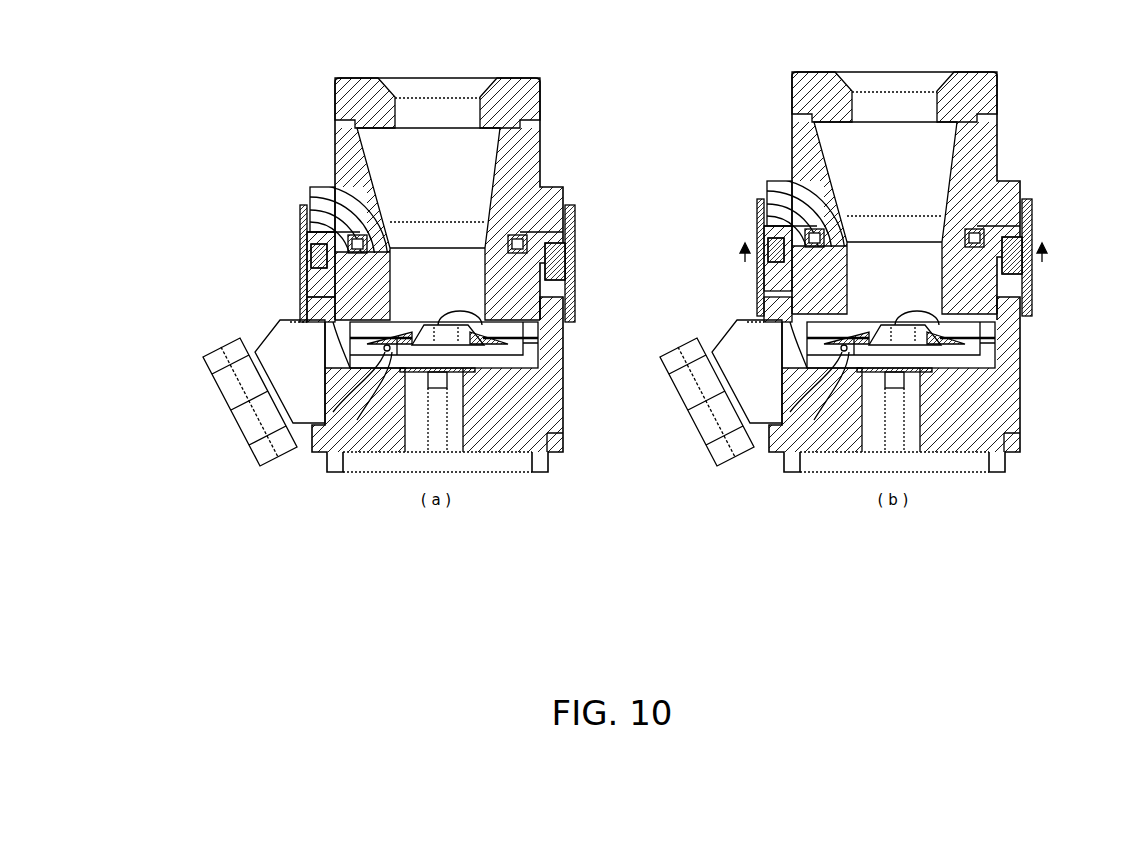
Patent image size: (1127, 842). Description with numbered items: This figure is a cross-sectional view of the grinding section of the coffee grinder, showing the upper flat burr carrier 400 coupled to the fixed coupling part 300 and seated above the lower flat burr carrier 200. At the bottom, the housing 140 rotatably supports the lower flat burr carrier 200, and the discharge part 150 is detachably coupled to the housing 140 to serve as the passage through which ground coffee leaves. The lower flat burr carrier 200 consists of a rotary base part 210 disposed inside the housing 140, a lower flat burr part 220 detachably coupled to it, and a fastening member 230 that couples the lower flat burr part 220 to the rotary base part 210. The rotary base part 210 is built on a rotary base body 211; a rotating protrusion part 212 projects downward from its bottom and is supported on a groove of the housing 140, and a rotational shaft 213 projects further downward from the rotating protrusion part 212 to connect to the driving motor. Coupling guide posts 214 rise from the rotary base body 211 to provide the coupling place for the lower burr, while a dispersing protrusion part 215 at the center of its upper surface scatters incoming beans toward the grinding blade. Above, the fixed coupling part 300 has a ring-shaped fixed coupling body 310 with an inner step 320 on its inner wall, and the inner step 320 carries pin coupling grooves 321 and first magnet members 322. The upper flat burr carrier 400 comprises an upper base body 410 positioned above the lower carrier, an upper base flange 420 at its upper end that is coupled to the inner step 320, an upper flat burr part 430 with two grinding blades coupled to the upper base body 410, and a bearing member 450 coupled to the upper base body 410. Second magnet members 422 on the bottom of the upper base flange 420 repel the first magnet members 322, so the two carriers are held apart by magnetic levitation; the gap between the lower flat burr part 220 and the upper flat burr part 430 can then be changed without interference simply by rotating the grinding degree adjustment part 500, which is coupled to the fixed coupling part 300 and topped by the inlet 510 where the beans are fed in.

The housing 140 is at (300, 468).
The discharge part 150 is at (230, 405).
The lower flat burr carrier 200 is at (303, 535).
The rotary base part 210 is at (498, 538).
The rotary base body 211 is at (522, 360).
The rotating protrusion part 212 is at (476, 372).
The rotational shaft 213 is at (425, 350).
The coupling guide posts 214 is at (405, 375).
The dispersing protrusion part 215 is at (490, 350).
The lower flat burr part 220 is at (562, 347).
The fastening member 230 is at (360, 395).
The fixed coupling part 300 is at (212, 252).
The fixed coupling body 310 is at (310, 283).
The inner step 320 is at (310, 250).
The pin coupling grooves 321 is at (320, 250).
The first magnet members 322 is at (555, 248).
The upper flat burr carrier 400 is at (236, 143).
The upper base body 410 is at (305, 227).
The upper base flange 420 is at (310, 200).
The second magnet members 422 is at (570, 227).
The upper flat burr part 430 is at (350, 197).
The bearing member 450 is at (350, 235).
The grinding degree adjustment part 500 is at (525, 150).
The inlet 510 is at (537, 85).